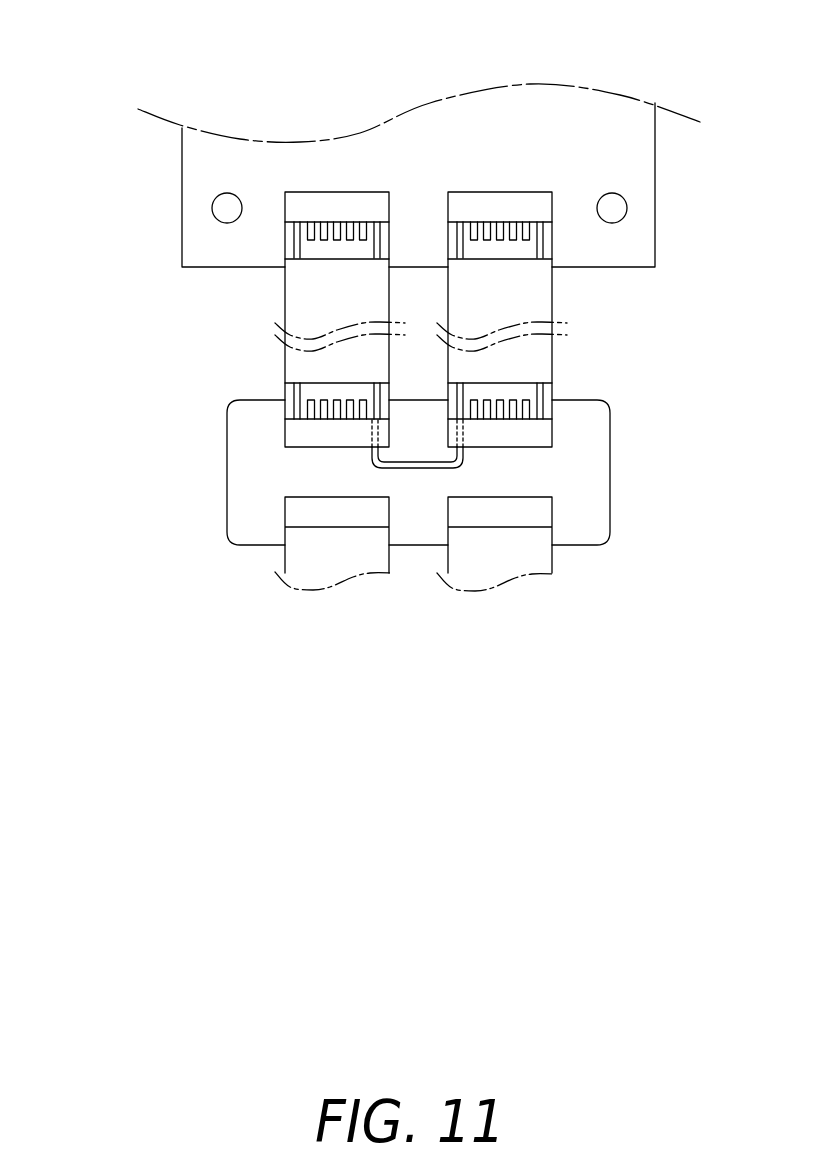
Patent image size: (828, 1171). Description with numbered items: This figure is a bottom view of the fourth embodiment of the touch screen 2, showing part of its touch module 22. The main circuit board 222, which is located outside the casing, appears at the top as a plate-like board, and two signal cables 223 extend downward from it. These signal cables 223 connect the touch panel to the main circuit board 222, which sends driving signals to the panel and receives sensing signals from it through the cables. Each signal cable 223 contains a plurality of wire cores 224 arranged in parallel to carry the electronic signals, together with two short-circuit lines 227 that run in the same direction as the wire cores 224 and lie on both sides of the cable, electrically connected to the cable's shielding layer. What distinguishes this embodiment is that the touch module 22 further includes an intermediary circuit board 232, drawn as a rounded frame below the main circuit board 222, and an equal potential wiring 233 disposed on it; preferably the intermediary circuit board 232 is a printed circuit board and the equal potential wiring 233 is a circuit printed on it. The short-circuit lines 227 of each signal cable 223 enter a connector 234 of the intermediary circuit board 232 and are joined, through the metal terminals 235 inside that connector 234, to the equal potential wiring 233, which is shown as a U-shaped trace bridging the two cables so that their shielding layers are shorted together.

The touch screen 2 is at (400, 82).
The touch module 22 is at (85, 190).
The main circuit board 222 is at (192, 222).
The signal cable 223 is at (297, 296).
The wire core 224 is at (310, 230).
The short-circuit line 227 is at (372, 245).
The intermediary circuit board 232 is at (243, 493).
The equal potential wiring 233 is at (417, 463).
The connector 234 is at (303, 433).
The metal terminal 235 is at (373, 433).